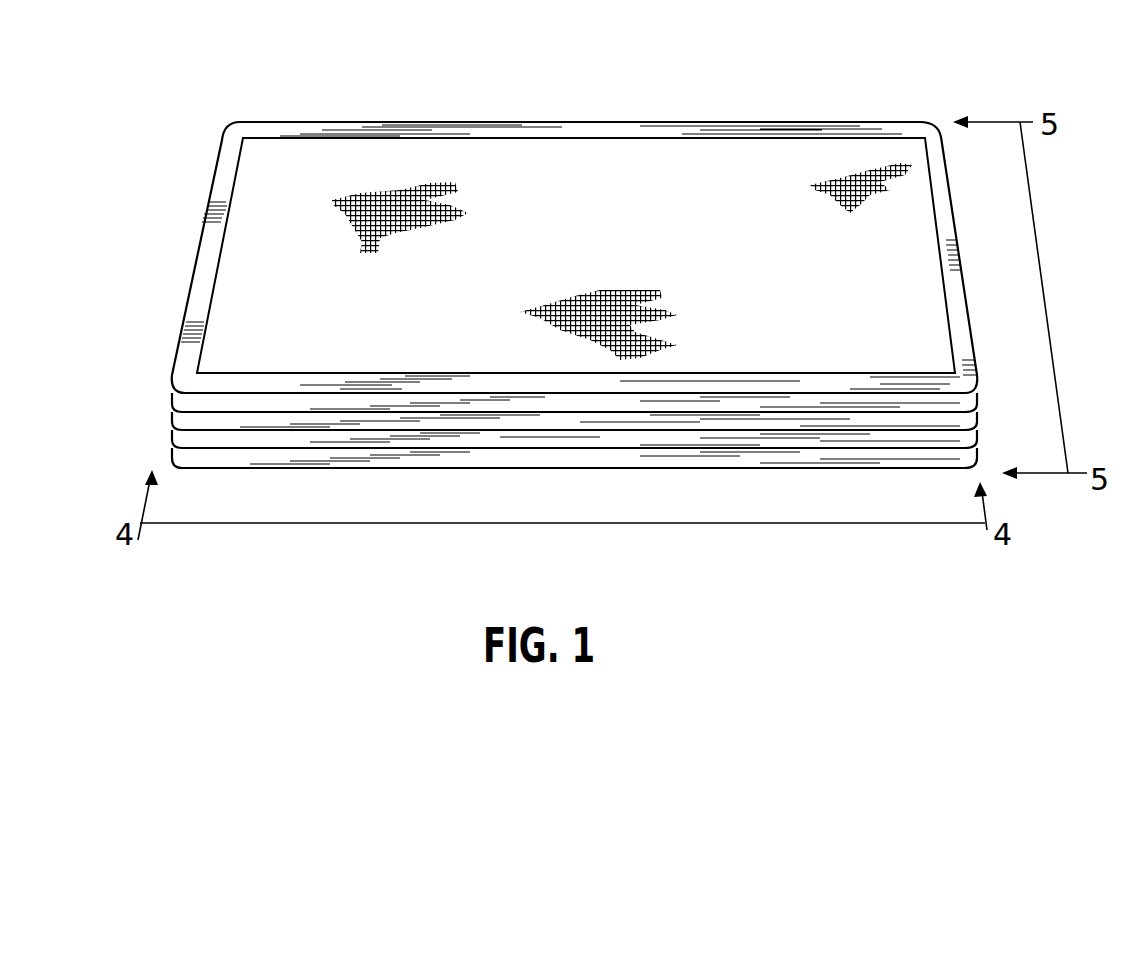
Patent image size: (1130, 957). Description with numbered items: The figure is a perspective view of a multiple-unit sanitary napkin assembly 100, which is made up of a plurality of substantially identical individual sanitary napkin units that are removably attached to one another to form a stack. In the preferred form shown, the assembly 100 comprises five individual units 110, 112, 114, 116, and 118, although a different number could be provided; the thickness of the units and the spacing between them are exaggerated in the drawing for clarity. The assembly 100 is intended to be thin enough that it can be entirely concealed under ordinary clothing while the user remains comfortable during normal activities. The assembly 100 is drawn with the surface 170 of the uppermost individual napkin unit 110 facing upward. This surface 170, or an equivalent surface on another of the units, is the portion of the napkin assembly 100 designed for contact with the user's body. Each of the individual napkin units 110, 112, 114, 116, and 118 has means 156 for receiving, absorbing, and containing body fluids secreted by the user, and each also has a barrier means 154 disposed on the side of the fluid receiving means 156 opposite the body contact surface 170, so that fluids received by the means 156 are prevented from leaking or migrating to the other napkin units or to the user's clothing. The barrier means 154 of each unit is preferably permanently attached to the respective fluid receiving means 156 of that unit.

The multiple-unit sanitary napkin assembly 100 is at (309, 102).
The uppermost individual napkin unit 110 is at (170, 373).
The individual napkin unit 112 is at (170, 394).
The individual napkin unit 114 is at (170, 411).
The individual napkin unit 116 is at (170, 429).
The individual napkin unit 118 is at (170, 447).
The barrier means 154 is at (876, 128).
The fluid receiving means 156 is at (758, 160).
The body contact surface 170 is at (767, 298).